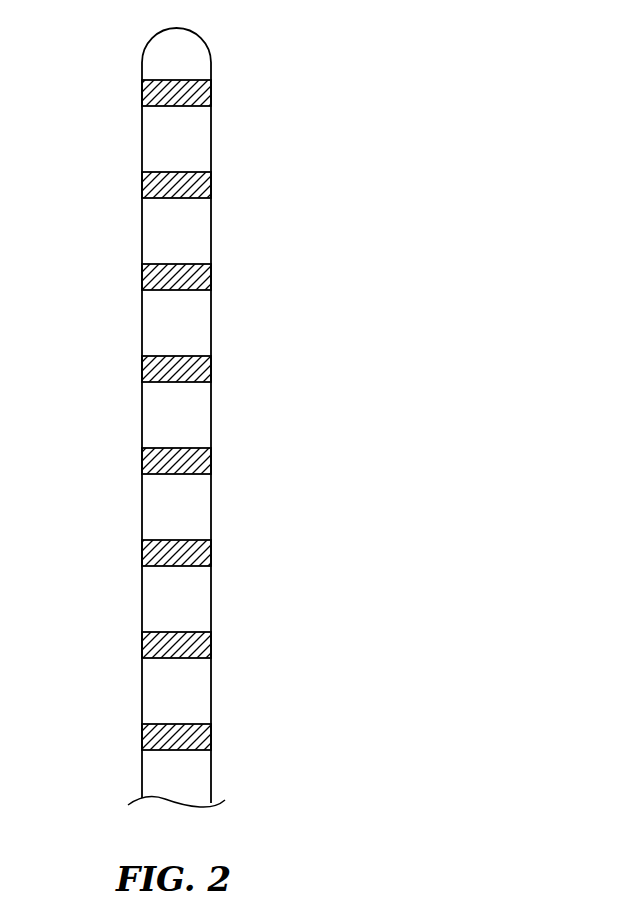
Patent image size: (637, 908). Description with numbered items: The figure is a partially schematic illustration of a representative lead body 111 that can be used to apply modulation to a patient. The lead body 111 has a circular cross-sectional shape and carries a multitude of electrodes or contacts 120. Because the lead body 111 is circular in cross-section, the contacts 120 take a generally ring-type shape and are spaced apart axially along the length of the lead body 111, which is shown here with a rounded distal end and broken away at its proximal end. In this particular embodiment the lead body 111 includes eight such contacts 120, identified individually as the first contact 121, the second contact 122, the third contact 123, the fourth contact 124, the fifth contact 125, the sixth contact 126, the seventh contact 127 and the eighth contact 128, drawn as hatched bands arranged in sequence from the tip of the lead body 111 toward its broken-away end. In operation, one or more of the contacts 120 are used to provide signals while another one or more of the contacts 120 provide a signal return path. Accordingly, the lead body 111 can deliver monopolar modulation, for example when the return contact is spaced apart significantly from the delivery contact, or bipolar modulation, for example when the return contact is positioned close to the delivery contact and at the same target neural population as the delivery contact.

The lead body 111 is at (368, 393).
The contacts 120 is at (280, 66).
The first contact 121 is at (150, 93).
The second contact 122 is at (182, 184).
The third contact 123 is at (186, 282).
The fourth contact 124 is at (187, 373).
The fifth contact 125 is at (187, 467).
The sixth contact 126 is at (187, 558).
The seventh contact 127 is at (187, 650).
The eighth contact 128 is at (187, 742).